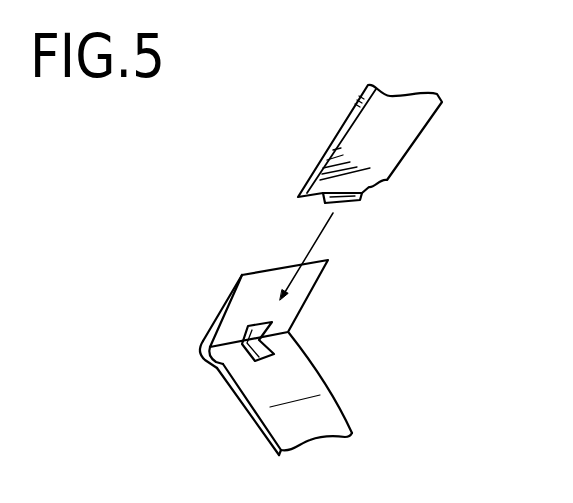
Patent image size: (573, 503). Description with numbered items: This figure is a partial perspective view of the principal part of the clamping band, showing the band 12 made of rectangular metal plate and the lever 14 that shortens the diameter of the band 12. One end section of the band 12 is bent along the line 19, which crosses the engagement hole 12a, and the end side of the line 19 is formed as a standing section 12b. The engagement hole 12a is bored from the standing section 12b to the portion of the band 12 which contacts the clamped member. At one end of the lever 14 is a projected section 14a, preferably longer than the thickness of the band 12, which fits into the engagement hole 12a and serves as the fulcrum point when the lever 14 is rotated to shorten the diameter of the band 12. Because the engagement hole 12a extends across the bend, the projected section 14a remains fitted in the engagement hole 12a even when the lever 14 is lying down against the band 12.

The band 12 is at (337, 420).
The engagement hole 12a is at (288, 333).
The standing section 12b is at (222, 308).
The lever 14 is at (442, 102).
The projected section 14a is at (362, 196).
The line 19 is at (223, 363).